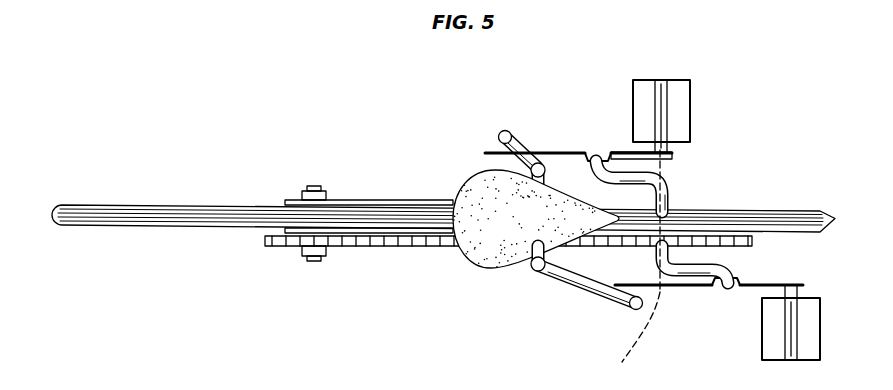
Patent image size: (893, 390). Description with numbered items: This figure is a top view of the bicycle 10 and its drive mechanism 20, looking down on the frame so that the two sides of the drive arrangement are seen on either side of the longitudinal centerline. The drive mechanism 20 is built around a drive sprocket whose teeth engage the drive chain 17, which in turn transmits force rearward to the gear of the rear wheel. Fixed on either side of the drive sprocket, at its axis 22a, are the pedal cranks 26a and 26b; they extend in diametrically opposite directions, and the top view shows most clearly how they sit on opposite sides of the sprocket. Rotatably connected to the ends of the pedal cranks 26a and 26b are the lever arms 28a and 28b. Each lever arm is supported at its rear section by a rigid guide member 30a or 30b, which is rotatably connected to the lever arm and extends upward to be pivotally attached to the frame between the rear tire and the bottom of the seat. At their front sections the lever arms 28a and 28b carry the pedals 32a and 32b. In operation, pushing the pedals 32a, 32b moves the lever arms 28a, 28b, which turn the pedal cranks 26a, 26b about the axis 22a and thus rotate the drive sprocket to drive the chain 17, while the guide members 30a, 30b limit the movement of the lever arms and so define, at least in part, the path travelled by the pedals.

The bicycle 10 is at (399, 183).
The drive chain 17 is at (383, 247).
The drive mechanism 20 is at (577, 132).
The axis 22a is at (621, 263).
The pedal crank 26a is at (672, 185).
The pedal crank 26b is at (735, 268).
The lever arm 28a is at (548, 150).
The lever arm 28b is at (665, 290).
The guide member 30a is at (500, 130).
The guide member 30b is at (582, 292).
The pedal 32a is at (688, 112).
The pedal 32b is at (778, 340).